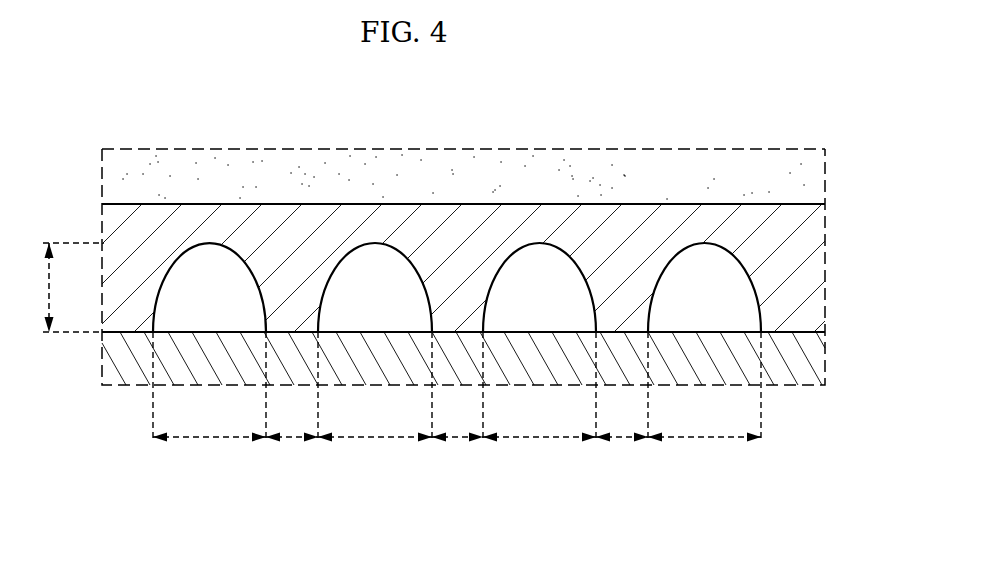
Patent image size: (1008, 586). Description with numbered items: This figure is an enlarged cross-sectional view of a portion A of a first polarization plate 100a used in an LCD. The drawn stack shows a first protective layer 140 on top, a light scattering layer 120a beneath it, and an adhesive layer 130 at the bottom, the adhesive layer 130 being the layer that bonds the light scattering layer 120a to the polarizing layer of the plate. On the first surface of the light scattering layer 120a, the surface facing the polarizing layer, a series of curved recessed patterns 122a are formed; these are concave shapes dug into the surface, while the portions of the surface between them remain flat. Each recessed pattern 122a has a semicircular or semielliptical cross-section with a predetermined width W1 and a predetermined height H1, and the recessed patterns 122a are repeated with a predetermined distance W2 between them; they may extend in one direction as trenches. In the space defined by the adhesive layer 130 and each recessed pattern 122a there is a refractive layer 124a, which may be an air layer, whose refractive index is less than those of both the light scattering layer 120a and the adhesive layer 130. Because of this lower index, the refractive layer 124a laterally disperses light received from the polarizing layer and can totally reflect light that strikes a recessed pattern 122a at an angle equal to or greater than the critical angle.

The first polarization plate 100a is at (458, 112).
The portion A is at (656, 148).
The first protective layer 140 is at (818, 172).
The light scattering layer 120a is at (818, 243).
The recessed patterns 122a is at (224, 281).
The refractive layer 124a is at (737, 294).
The adhesive layer 130 is at (818, 360).
The height H1 is at (61, 287).
The width W1 is at (374, 402).
The distance W2 is at (513, 402).